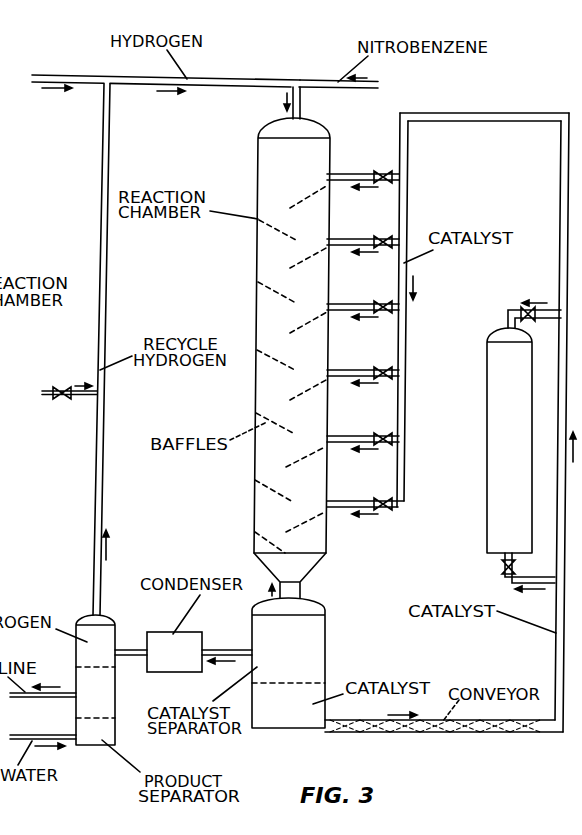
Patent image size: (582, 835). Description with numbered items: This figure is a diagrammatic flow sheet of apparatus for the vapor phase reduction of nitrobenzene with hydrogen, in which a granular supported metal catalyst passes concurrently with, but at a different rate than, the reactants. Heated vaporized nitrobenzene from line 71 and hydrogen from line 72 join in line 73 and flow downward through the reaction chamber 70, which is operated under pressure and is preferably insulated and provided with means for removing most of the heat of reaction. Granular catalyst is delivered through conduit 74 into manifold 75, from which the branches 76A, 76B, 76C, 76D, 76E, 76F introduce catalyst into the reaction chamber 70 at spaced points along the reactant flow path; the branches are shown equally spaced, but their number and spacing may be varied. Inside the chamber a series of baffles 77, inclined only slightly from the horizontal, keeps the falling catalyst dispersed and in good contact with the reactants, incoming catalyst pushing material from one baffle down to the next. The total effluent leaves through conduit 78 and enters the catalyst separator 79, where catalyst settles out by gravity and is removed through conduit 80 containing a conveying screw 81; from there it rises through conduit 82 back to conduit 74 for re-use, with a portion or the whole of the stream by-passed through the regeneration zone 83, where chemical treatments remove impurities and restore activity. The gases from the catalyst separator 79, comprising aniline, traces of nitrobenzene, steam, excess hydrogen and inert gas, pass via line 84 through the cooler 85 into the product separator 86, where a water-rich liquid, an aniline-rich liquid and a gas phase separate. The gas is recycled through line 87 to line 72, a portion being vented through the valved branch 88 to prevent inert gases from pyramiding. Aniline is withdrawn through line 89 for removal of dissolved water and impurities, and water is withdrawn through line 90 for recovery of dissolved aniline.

The reaction chamber 70 is at (263, 303).
The nitrobenzene line 71 is at (318, 81).
The hydrogen line 72 is at (228, 81).
The inlet line 73 is at (301, 107).
The catalyst conduit 74 is at (472, 121).
The manifold 75 is at (406, 338).
The catalyst branch 76A is at (360, 173).
The catalyst branch 76B is at (360, 238).
The catalyst branch 76C is at (360, 303).
The catalyst branch 76D is at (360, 369).
The catalyst branch 76E is at (360, 435).
The catalyst branch 76F is at (360, 500).
The baffles 77 is at (275, 360).
The effluent conduit 78 is at (302, 592).
The catalyst separator 79 is at (314, 648).
The catalyst removal conduit 80 is at (382, 732).
The screw 81 is at (421, 732).
The catalyst return conduit 82 is at (561, 213).
The regeneration zone 83 is at (492, 527).
The gas line 84 is at (218, 649).
The cooler 85 is at (158, 671).
The product separator 86 is at (108, 705).
The recycle gas line 87 is at (96, 518).
The valved branch 88 is at (82, 398).
The aniline line 89 is at (31, 697).
The water line 90 is at (60, 735).